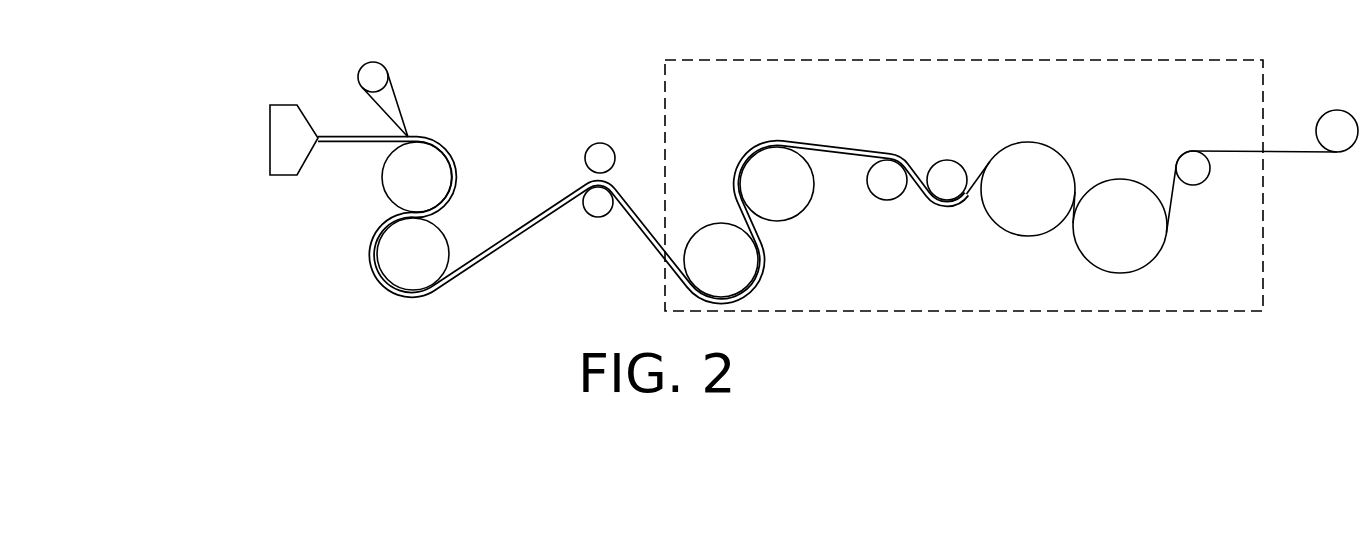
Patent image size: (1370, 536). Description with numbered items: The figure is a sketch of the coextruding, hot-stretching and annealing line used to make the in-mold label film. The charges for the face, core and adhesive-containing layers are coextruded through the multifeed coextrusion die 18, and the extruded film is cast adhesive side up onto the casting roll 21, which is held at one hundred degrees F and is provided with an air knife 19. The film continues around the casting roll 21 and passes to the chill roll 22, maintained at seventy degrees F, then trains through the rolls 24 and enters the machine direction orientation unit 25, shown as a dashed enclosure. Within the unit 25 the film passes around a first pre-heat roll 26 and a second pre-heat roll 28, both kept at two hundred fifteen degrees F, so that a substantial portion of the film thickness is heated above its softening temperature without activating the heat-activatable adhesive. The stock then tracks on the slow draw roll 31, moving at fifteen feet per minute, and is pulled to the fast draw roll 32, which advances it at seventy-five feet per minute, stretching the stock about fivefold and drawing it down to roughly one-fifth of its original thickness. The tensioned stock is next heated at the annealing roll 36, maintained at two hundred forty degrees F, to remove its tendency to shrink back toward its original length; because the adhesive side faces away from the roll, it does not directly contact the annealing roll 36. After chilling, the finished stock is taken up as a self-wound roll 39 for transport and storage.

The multifeed coextrusion die 18 is at (287, 130).
The air knife 19 is at (376, 71).
The casting roll 21 is at (390, 173).
The chill roll 22 is at (432, 234).
The rolls 24 is at (599, 146).
The machine direction orientation unit 25 is at (675, 83).
The first pre-heat roll 26 is at (734, 230).
The second pre-heat roll 28 is at (767, 212).
The slow draw roll 31 is at (870, 182).
The fast draw roll 32 is at (932, 165).
The annealing roll 36 is at (1088, 187).
The self-wound roll 39 is at (1342, 110).